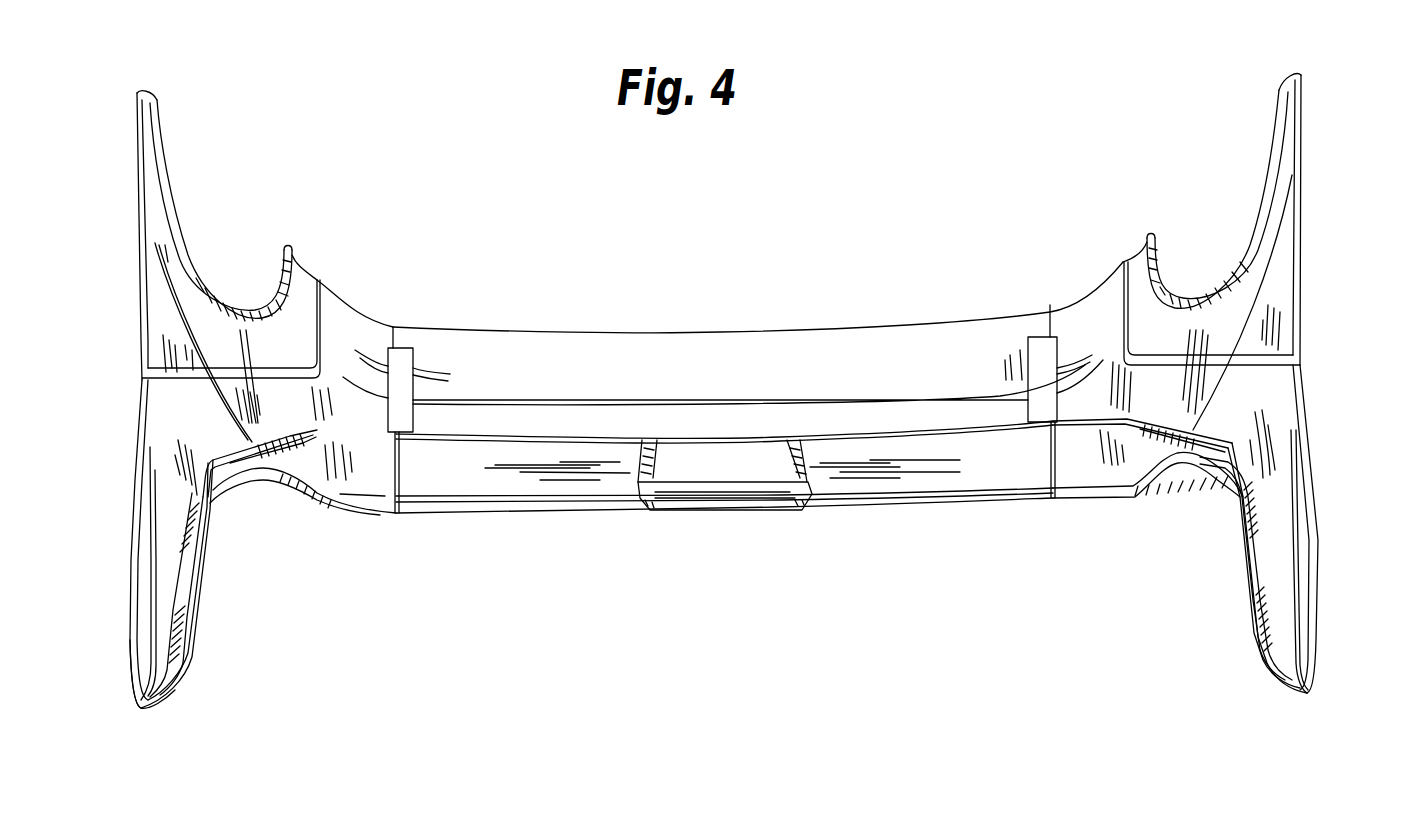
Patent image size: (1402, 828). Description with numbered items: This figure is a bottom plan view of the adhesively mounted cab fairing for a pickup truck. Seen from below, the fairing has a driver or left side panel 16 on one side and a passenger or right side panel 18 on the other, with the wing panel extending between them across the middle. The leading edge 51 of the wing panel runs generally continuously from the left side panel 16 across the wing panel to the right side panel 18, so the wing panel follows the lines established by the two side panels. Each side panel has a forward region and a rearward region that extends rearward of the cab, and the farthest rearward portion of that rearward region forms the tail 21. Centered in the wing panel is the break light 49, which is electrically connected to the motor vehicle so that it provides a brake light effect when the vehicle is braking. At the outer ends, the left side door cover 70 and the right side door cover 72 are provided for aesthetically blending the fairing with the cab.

The left side door cover 70 is at (142, 292).
The right side door cover 72 is at (1300, 270).
The left side panel 16 is at (138, 500).
The right side panel 18 is at (1312, 523).
The leading edge 51 is at (723, 330).
The tail 21 is at (840, 512).
The break light 49 is at (718, 500).